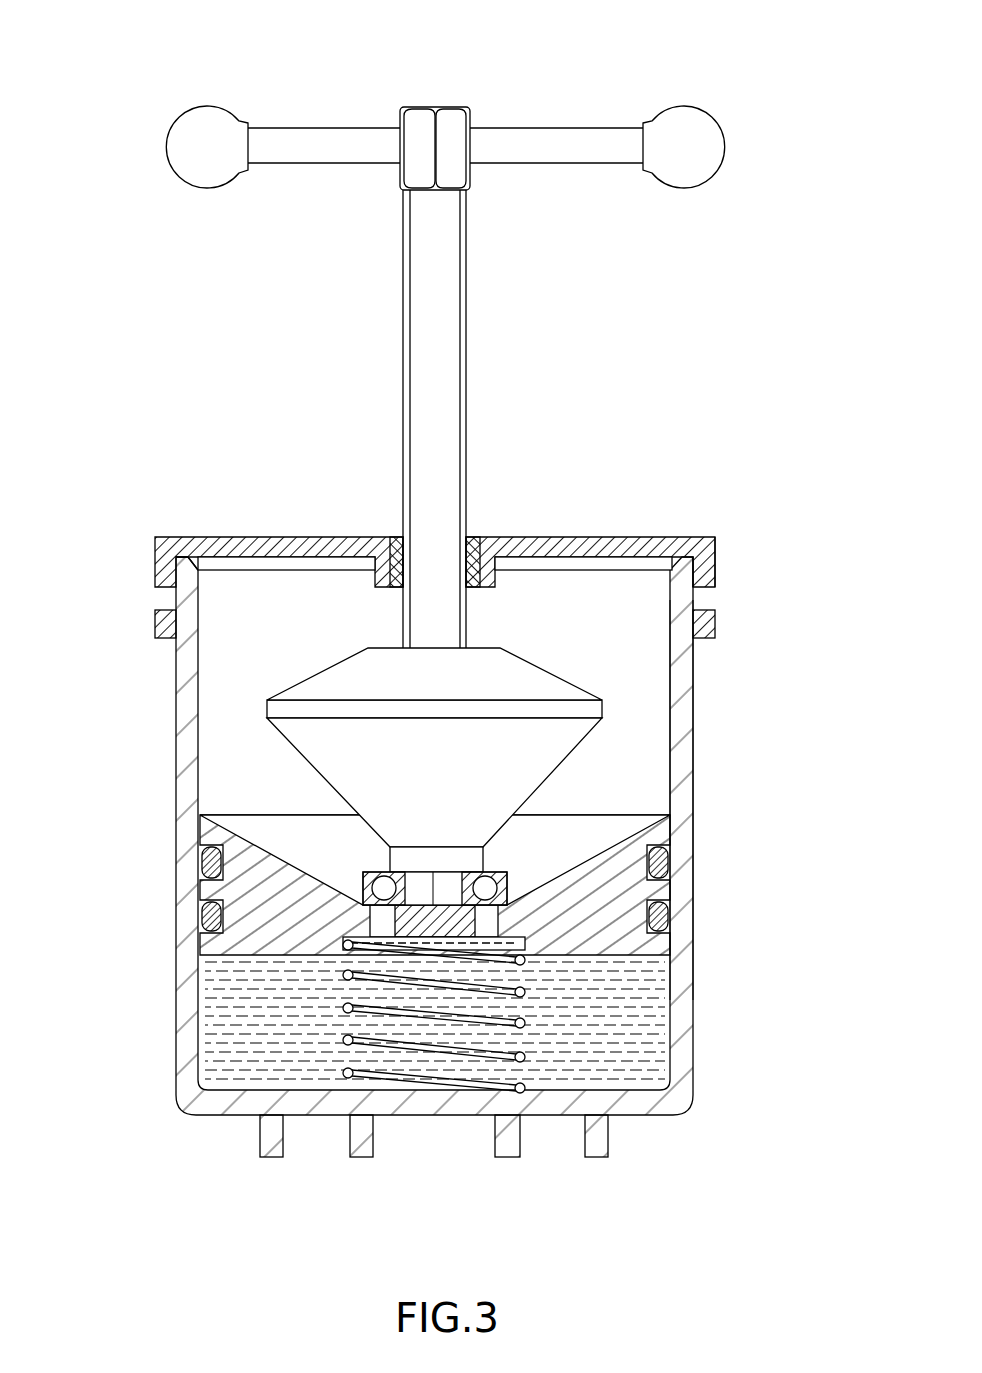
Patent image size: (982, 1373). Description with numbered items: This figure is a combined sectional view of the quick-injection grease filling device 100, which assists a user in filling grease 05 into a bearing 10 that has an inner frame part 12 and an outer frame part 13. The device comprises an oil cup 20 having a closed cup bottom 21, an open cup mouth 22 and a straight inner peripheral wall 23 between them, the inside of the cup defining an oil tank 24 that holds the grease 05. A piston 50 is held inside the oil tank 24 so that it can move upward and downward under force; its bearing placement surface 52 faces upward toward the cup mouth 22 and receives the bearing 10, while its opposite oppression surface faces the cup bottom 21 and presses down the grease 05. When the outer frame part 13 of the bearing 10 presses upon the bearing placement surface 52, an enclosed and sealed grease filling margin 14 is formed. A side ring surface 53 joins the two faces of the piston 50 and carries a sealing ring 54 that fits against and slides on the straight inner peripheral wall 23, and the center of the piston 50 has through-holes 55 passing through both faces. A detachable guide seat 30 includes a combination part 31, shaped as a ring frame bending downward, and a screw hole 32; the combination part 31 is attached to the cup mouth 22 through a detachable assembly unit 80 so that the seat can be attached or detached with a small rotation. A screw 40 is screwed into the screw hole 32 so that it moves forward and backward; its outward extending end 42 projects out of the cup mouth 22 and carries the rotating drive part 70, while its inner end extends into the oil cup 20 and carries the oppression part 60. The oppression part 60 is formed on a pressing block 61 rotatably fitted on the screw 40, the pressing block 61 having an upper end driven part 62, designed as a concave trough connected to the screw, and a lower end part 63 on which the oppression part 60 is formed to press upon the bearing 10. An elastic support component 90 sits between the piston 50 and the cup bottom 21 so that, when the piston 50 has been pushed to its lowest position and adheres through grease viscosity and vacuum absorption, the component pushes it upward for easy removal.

The quick-injection grease filling device 100 is at (833, 42).
The rotating drive part 70 is at (598, 110).
The outward extending end 42 is at (435, 107).
The screw 40 is at (473, 338).
The detachable guide seat 30 is at (657, 530).
The combination part 31 is at (715, 570).
The screw hole 32 is at (395, 555).
The cup mouth 22 is at (205, 568).
The oil cup 20 is at (153, 737).
The straight inner peripheral wall 23 is at (686, 718).
The oil tank 24 is at (657, 1011).
The cup bottom 21 is at (630, 1107).
The detachable assembly unit 80 is at (720, 613).
The oppression part 60 is at (525, 942).
The pressing block 61 is at (603, 740).
The upper end driven part 62 is at (472, 648).
The lower end part 63 is at (493, 862).
The bearing 10 is at (400, 868).
The inner frame part 12 is at (455, 922).
The outer frame part 13 is at (503, 885).
The grease filling margin 14 is at (362, 871).
The piston 50 is at (257, 898).
The bearing placement surface 52 is at (297, 870).
The side ring surface 53 is at (665, 858).
The sealing ring 54 is at (205, 865).
The through-holes 55 is at (370, 922).
The grease 05 is at (227, 1018).
The elastic support component 90 is at (440, 1092).